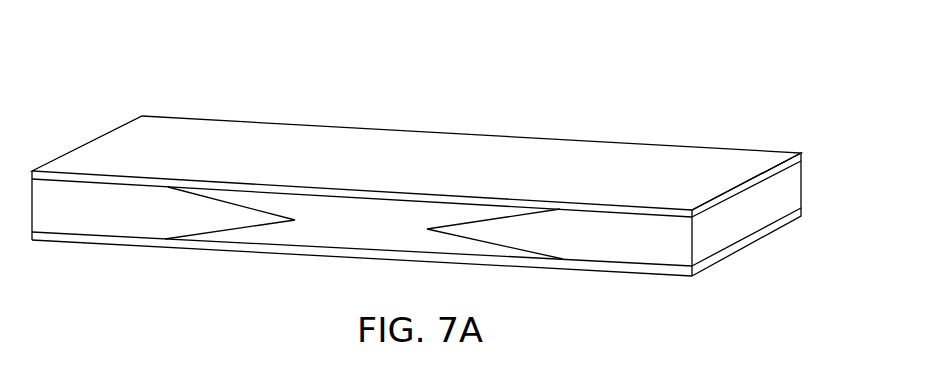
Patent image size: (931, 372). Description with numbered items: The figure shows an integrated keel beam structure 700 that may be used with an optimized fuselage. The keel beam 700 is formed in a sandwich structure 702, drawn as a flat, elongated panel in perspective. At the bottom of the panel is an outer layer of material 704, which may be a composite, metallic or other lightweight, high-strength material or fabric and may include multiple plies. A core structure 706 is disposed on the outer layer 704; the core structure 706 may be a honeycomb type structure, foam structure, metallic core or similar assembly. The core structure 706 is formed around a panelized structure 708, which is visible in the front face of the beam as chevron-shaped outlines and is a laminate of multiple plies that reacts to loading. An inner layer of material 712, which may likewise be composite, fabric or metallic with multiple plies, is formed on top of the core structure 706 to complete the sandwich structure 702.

The integrated keel beam structure 700 is at (451, 151).
The sandwich structure 702 is at (814, 175).
The outer layer of material 704 is at (710, 265).
The core structure 706 is at (798, 200).
The panelized structure 708 is at (515, 247).
The inner layer of material 712 is at (752, 153).